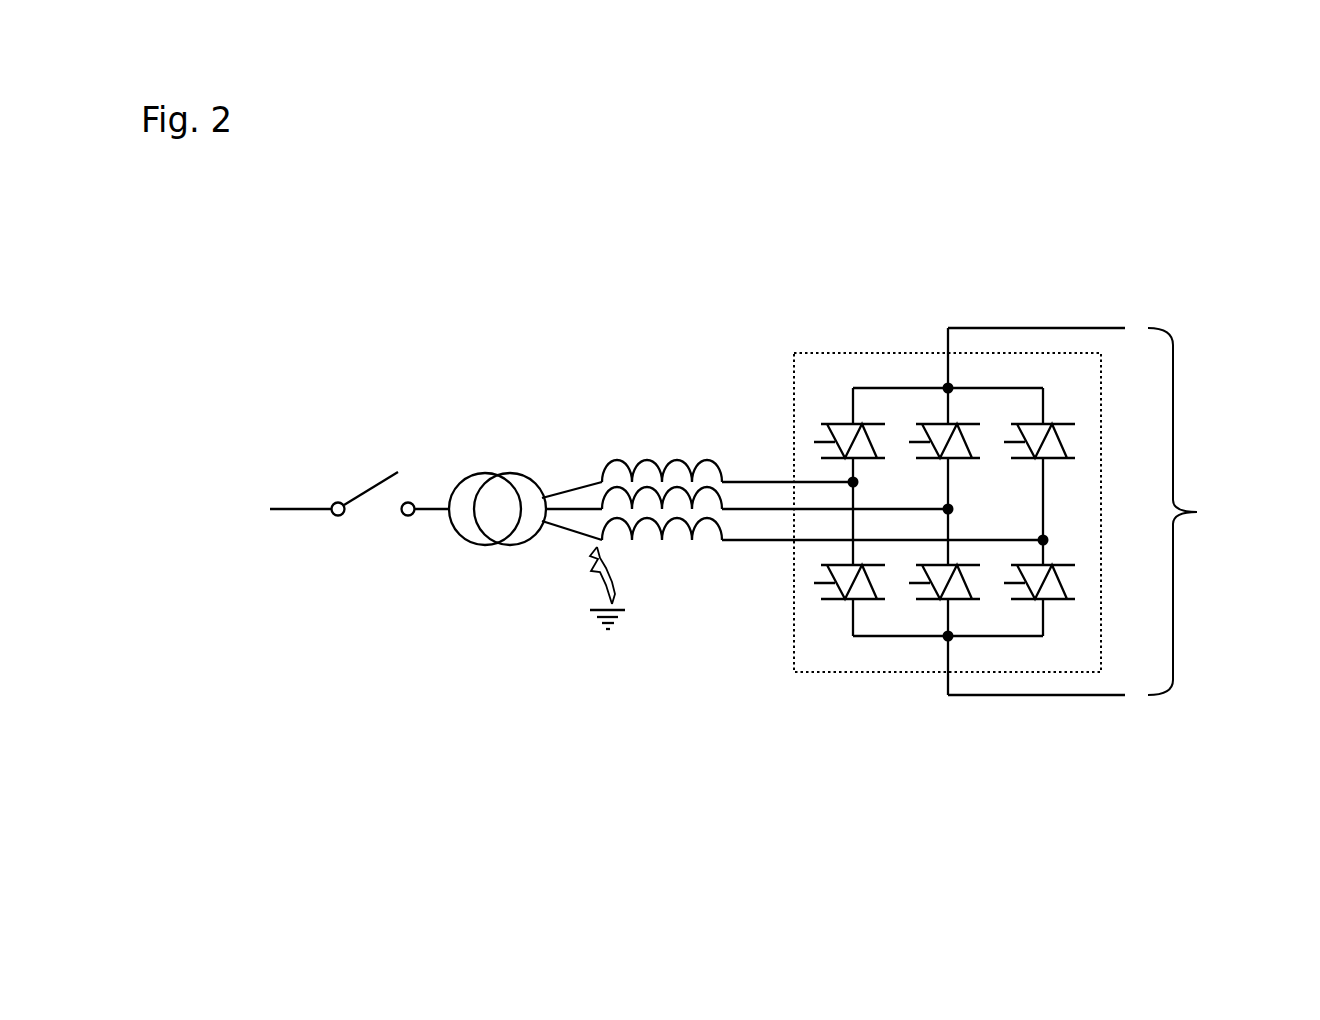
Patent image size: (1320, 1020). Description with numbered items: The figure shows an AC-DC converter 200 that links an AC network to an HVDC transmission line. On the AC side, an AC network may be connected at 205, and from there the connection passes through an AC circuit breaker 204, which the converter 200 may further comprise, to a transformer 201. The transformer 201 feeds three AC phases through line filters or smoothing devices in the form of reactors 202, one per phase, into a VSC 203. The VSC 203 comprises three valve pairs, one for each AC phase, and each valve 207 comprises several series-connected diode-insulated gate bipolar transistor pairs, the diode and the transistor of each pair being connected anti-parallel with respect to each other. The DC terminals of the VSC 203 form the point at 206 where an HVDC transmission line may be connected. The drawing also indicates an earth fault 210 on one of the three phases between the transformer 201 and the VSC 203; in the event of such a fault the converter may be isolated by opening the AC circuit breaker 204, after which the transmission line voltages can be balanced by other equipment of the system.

The AC-DC converter 200 is at (317, 730).
The transformer 201 is at (525, 536).
The reactors 202 is at (822, 478).
The VSC 203 is at (906, 531).
The AC circuit breaker 204 is at (391, 524).
The AC network connection point 205 is at (269, 510).
The HVDC transmission line connection point 206 is at (1109, 511).
The valve 207 is at (815, 610).
The earth fault 210 is at (629, 588).